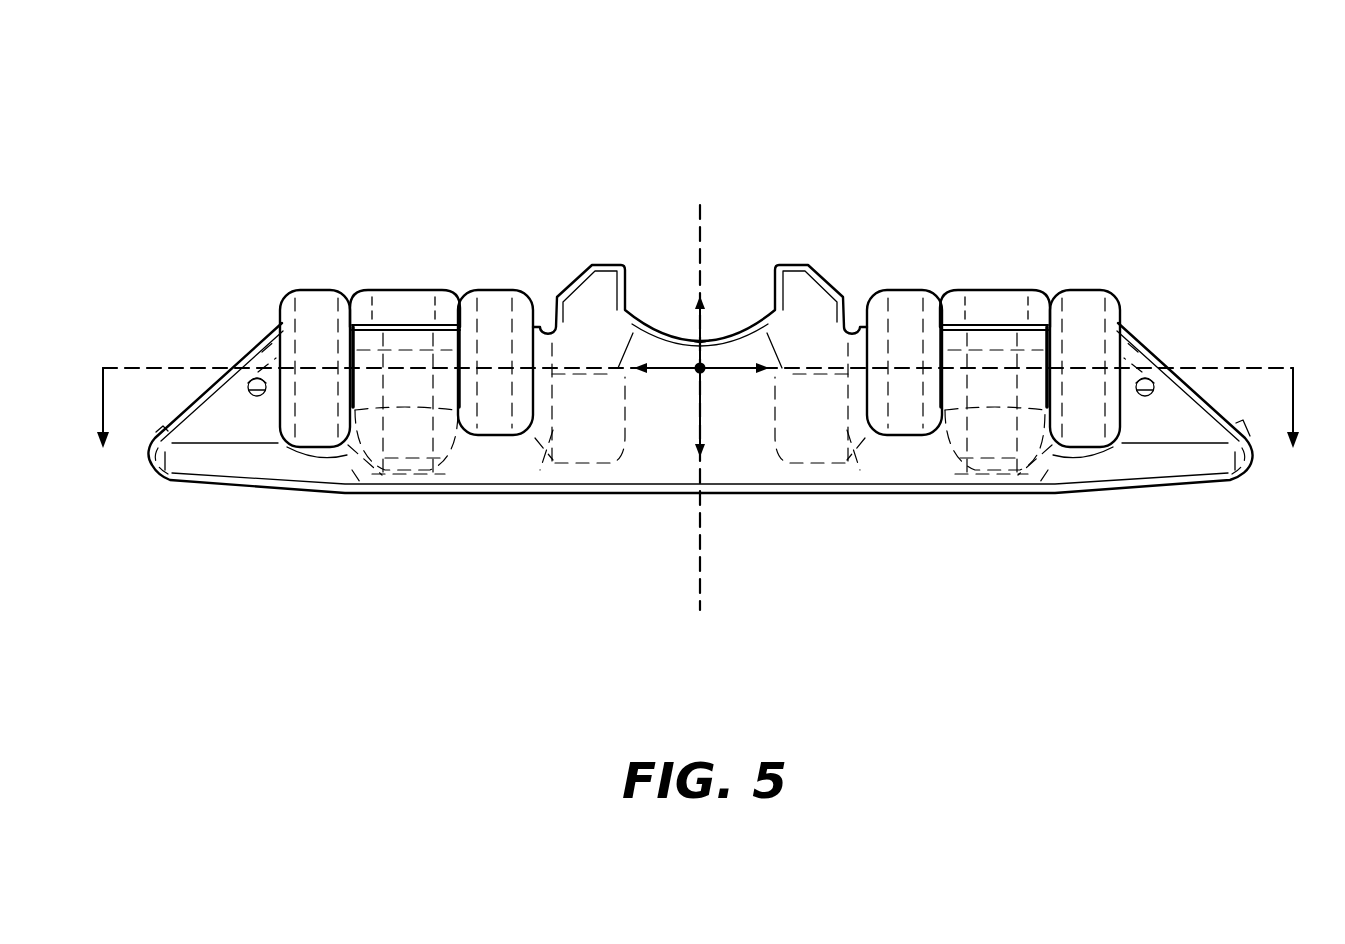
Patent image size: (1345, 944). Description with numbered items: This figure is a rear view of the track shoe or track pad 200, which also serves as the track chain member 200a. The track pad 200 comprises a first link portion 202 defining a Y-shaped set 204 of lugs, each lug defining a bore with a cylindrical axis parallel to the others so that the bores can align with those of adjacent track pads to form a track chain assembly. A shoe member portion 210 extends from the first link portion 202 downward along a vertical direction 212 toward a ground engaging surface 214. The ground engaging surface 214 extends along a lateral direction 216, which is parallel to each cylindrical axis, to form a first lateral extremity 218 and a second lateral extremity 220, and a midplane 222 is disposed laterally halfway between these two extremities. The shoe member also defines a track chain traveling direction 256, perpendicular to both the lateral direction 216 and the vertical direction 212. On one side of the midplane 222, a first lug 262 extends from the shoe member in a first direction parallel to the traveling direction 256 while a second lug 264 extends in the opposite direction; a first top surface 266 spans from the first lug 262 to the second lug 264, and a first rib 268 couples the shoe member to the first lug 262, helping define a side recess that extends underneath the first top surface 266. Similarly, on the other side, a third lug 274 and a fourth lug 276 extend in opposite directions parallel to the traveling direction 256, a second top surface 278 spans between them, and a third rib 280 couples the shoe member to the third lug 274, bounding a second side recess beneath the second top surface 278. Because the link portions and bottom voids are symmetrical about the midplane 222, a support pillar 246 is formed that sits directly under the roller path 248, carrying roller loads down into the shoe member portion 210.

The track pad 200 is at (494, 166).
The track chain member 200a is at (946, 86).
The first link portion 202 is at (347, 283).
The Y-shaped set of lugs 204 is at (458, 284).
The shoe member portion 210 is at (794, 516).
The vertical direction 212 is at (703, 330).
The ground engaging surface 214 is at (585, 494).
The lateral direction 216 is at (737, 372).
The first lateral extremity 218 is at (153, 452).
The second lateral extremity 220 is at (1254, 455).
The midplane 222 is at (703, 608).
The support pillar 246 is at (663, 430).
The roller path 248 is at (757, 333).
The track chain traveling direction 256 is at (698, 363).
The first lug 262 is at (322, 424).
The second lug 264 is at (408, 300).
The first top surface 266 is at (400, 327).
The first rib 268 is at (226, 410).
The third lug 274 is at (1087, 434).
The fourth lug 276 is at (973, 298).
The second top surface 278 is at (988, 324).
The third rib 280 is at (1172, 398).